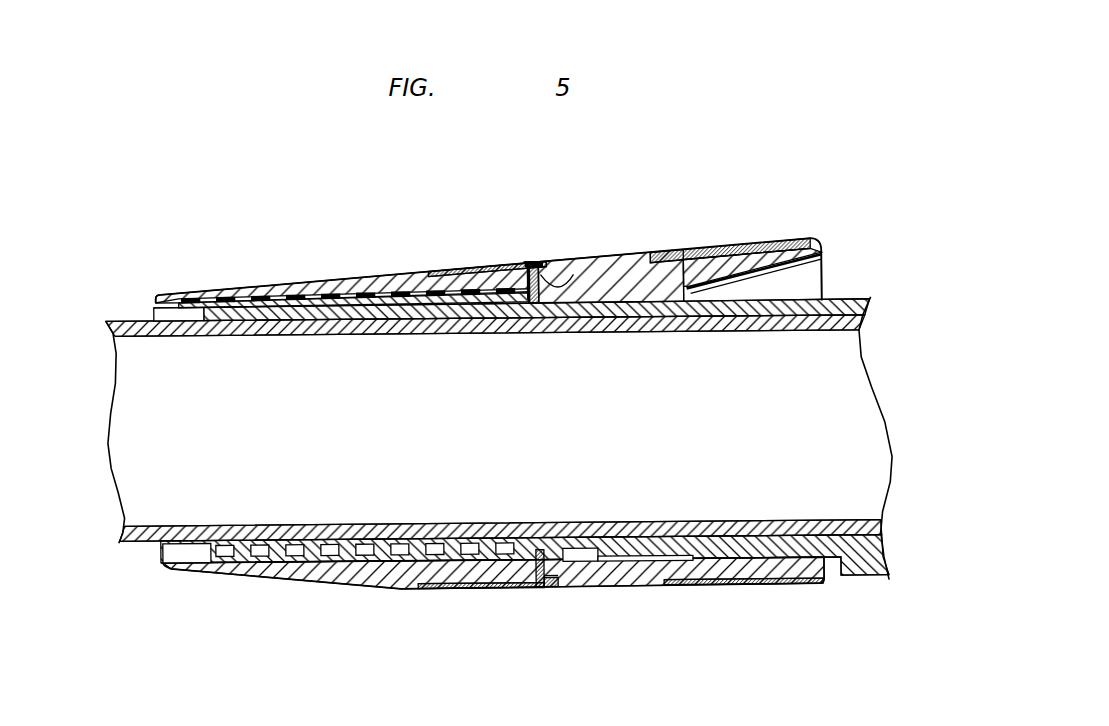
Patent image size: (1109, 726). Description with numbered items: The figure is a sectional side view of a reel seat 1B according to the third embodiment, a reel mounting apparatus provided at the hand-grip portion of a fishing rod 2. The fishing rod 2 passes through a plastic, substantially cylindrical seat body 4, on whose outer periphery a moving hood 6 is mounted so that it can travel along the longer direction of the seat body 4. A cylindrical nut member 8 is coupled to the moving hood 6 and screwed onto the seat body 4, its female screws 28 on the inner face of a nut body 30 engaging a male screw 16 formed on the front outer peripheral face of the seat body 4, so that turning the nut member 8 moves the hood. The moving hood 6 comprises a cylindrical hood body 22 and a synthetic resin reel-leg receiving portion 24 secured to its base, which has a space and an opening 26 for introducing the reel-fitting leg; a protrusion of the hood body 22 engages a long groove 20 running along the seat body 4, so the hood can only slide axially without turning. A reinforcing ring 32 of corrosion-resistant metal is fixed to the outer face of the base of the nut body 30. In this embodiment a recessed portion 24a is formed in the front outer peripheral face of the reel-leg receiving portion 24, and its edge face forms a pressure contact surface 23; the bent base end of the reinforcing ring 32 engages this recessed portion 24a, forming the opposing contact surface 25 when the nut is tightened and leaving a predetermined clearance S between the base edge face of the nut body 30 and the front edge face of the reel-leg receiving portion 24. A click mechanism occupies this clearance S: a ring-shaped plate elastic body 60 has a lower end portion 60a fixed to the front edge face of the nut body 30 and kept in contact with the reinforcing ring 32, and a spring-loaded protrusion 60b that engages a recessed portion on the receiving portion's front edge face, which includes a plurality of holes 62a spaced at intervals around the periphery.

The reel seat 1B is at (644, 230).
The fishing rod 2 is at (802, 523).
The seat body 4 is at (860, 578).
The moving hood 6 is at (780, 230).
The nut member 8 is at (348, 266).
The male screw 16 is at (273, 545).
The long groove 20 is at (634, 556).
The hood body 22 is at (689, 252).
The contact surface 23 is at (544, 590).
The reel-leg receiving portion 24 is at (733, 257).
The recessed portion 24a is at (550, 592).
The contact surface 25 is at (547, 262).
The opening 26 is at (816, 277).
The female screws 28 is at (300, 282).
The nut body 30 is at (300, 296).
The reinforcing ring 32 is at (464, 270).
The elastic body 60 is at (540, 333).
The lower end portion 60a is at (533, 560).
The protrusion 60b is at (531, 265).
The holes 62a is at (556, 270).
The clearance S is at (537, 262).